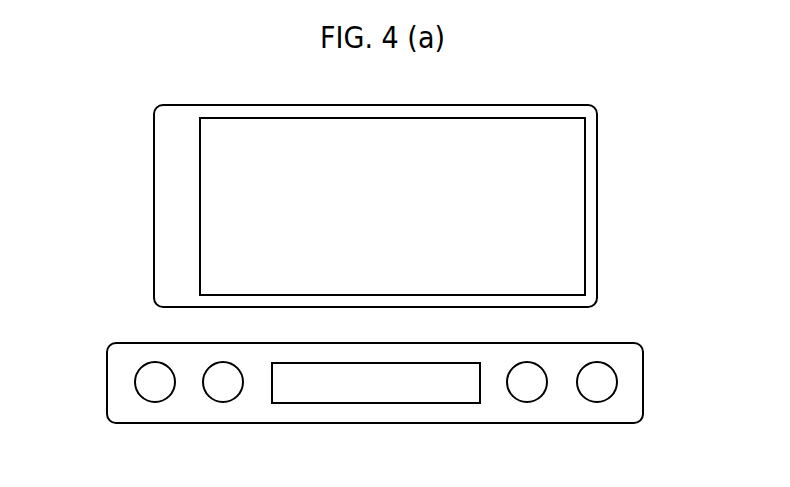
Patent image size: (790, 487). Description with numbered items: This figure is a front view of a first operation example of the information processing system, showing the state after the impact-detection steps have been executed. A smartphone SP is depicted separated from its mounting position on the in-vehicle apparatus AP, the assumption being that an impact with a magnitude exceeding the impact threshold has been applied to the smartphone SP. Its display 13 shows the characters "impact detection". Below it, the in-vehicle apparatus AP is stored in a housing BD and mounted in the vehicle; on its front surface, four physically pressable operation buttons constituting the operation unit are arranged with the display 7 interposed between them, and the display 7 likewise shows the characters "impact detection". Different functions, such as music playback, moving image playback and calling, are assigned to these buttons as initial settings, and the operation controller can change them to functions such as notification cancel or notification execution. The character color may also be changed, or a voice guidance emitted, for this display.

The display 13 is at (572, 150).
The smartphone SP is at (398, 206).
The housing BD is at (108, 347).
The in-vehicle apparatus AP is at (412, 403).
The display 7 is at (313, 403).